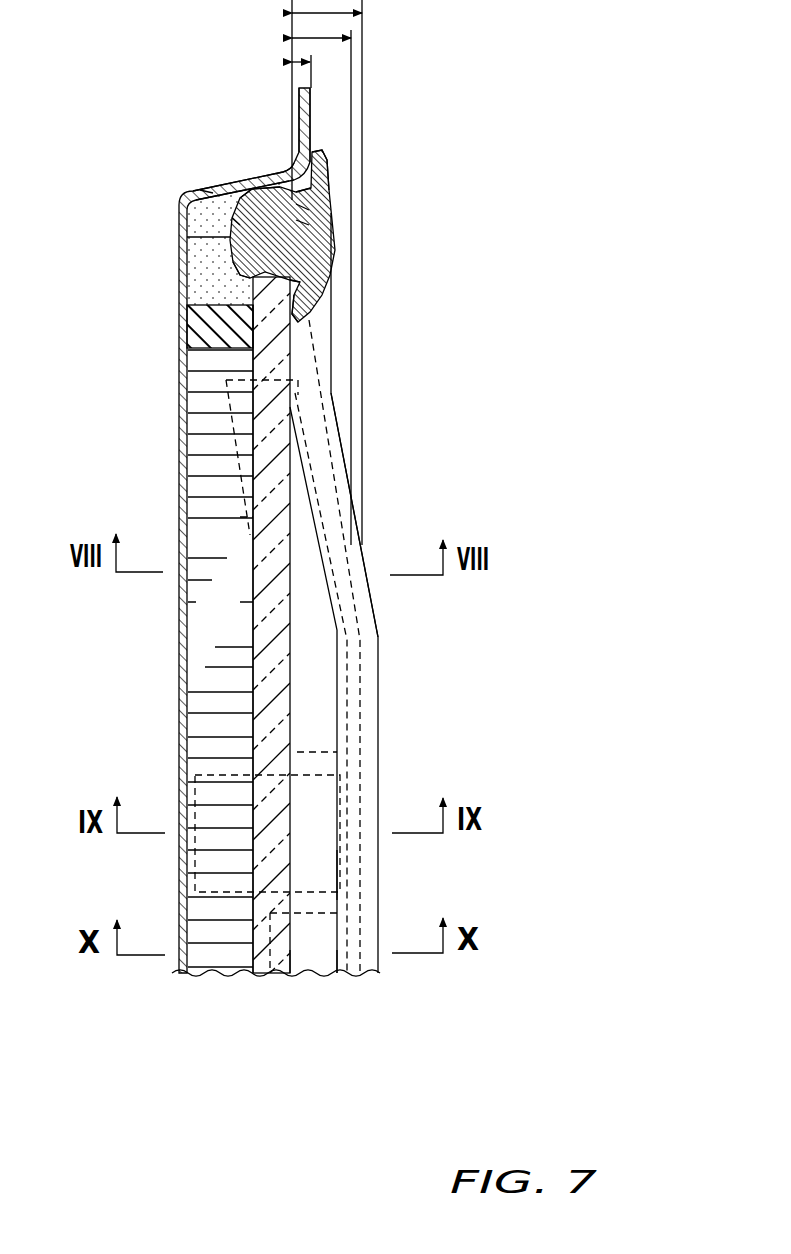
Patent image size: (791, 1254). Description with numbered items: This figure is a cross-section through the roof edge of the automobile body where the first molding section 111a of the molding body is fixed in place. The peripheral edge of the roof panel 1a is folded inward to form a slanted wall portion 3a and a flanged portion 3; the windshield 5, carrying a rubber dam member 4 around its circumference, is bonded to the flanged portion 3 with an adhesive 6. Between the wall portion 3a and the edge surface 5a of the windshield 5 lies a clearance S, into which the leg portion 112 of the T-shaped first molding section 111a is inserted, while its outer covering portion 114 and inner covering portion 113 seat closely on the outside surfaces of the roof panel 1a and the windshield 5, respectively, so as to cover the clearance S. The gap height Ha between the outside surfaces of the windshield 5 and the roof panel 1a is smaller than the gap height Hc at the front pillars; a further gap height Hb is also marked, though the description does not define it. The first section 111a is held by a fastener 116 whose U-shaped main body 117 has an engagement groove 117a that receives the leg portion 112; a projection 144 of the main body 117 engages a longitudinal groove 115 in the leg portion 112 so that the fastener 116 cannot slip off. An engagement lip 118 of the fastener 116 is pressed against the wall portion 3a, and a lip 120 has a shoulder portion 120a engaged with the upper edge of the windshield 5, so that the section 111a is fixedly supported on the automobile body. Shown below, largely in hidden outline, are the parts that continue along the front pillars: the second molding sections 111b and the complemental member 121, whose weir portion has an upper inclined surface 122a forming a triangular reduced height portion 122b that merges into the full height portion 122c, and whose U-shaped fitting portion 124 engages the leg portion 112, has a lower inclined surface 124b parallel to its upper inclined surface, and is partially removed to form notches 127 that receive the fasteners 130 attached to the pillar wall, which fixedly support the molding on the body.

The roof panel 1a is at (312, 108).
The flanged portion 3 is at (180, 262).
The slanted wall portion 3a is at (227, 190).
The dam member 4 is at (223, 350).
The windshield 5 is at (253, 490).
The edge surface 5a is at (298, 278).
The adhesive 6 is at (181, 211).
The clearance S is at (277, 170).
The gap height Ha is at (300, 62).
The dimension Hb is at (340, 42).
The gap height Hc is at (352, 12).
The first molding section 111a is at (338, 252).
The second molding section 111b is at (378, 713).
The leg portion 112 is at (213, 193).
The inner covering portion 113 is at (290, 300).
The outer covering portion 114 is at (318, 170).
The groove 115 is at (305, 215).
The fastener 116 is at (227, 237).
The main body 117 is at (237, 225).
The engagement groove 117a is at (300, 218).
The engagement lip 118 is at (237, 190).
The lip 120 is at (253, 283).
The shoulder portion 120a is at (247, 290).
The complemental member 121 is at (316, 962).
The upper inclined surface 122a is at (318, 460).
The reduced height portion 122b is at (315, 600).
The full height portion 122c is at (318, 853).
The fitting portion 124 is at (270, 621).
The lower inclined surface 124b is at (250, 517).
The notches 127 is at (337, 752).
The fastener 130 is at (222, 773).
The projection 144 is at (300, 205).